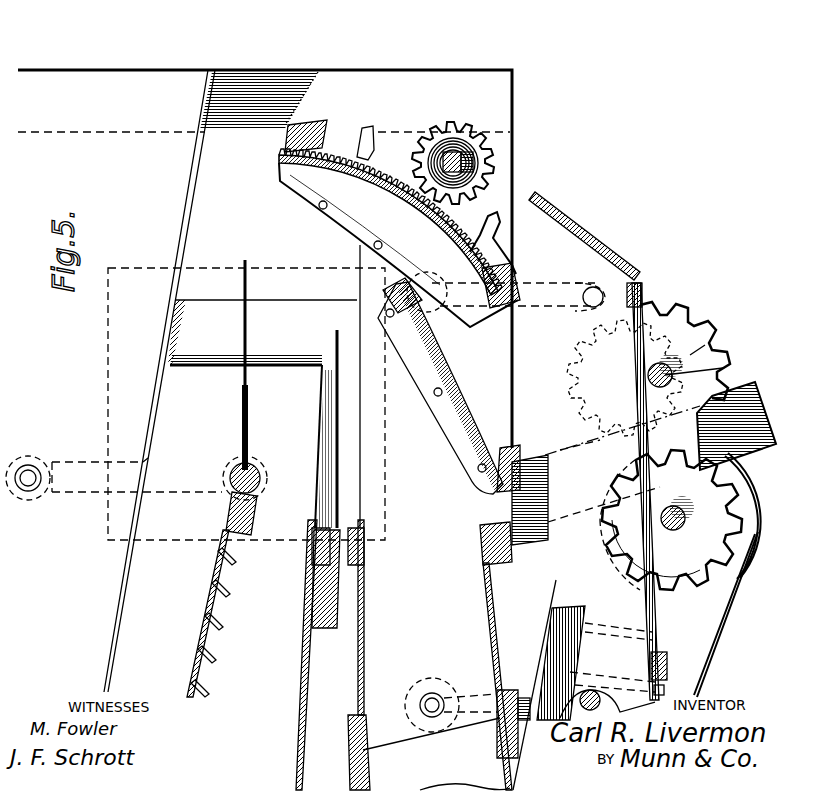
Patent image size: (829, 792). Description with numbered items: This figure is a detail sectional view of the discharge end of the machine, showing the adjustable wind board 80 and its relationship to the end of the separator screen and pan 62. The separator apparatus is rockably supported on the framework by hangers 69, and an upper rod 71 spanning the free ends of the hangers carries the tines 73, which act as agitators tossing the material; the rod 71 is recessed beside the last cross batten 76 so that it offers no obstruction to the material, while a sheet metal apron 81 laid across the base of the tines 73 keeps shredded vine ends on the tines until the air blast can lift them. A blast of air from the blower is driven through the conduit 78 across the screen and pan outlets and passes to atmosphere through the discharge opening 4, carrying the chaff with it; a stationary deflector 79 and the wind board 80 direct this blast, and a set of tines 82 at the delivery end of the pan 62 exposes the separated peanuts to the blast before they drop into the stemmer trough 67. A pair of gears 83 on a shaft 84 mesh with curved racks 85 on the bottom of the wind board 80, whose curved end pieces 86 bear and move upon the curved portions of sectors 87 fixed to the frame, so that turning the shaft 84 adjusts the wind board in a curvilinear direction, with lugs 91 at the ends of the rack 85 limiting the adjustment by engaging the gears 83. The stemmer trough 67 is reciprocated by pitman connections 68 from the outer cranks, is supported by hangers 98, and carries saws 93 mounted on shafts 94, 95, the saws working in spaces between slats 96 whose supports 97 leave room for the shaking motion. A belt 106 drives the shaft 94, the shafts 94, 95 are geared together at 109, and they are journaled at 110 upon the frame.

The discharge opening 4 is at (178, 80).
The journal 110 is at (170, 268).
The tines 73 is at (243, 312).
The tines 82 is at (334, 348).
The apron 81 is at (243, 398).
The rod 71 is at (232, 470).
The hangers 69 is at (130, 458).
The cross batten 76 is at (228, 506).
The stationary deflector 79 is at (218, 537).
The pan 62 is at (300, 648).
The conduit 78 is at (357, 675).
The hangers 98 is at (512, 292).
The adjustable wind board 80 is at (340, 150).
The end pieces 86 is at (292, 168).
The sectors 87 is at (336, 222).
The shaft 84 is at (450, 158).
The gears 83 is at (432, 140).
The racks 85 is at (395, 165).
The lugs 91 is at (364, 128).
The stemmer trough 67 is at (600, 272).
The supports 97 is at (645, 298).
The slats 96 is at (650, 308).
The gearing 109 is at (690, 340).
The saws 93 is at (706, 345).
The shaft 95 is at (735, 385).
The shaft 94 is at (758, 530).
The belt 106 is at (736, 660).
The pitman connections 68 is at (575, 645).